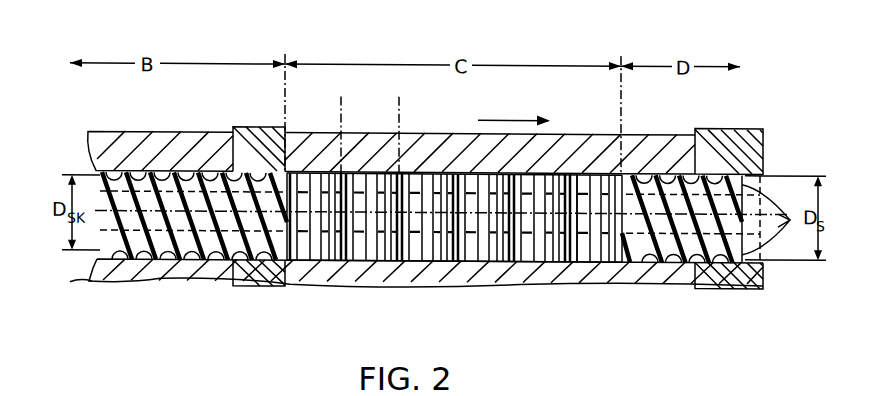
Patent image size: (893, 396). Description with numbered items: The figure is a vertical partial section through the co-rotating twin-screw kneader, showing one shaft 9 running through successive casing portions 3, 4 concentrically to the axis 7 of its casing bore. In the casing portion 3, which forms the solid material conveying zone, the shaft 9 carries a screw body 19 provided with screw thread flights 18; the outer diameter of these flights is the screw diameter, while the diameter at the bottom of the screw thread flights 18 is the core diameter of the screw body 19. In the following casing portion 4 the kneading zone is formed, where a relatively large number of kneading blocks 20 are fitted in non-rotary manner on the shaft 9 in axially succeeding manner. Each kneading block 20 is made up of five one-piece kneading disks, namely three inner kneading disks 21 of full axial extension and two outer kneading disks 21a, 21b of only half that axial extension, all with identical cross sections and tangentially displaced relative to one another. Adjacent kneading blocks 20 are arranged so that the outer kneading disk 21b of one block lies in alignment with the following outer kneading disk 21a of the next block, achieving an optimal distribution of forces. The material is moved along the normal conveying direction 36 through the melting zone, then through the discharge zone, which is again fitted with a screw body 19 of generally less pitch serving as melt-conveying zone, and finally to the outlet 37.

The casing portion 3 is at (148, 141).
The casing portion 4 is at (587, 150).
The axis 7 is at (779, 222).
The shaft 9 is at (668, 238).
The screw thread flights 18 is at (139, 238).
The screw body 19 is at (184, 238).
The kneading block 20 is at (432, 101).
The kneading disks 21 is at (465, 240).
The outer kneading disk 21a is at (577, 240).
The outer kneading disk 21b is at (509, 240).
The normal conveying direction 36 is at (512, 118).
The outlet 37 is at (744, 182).